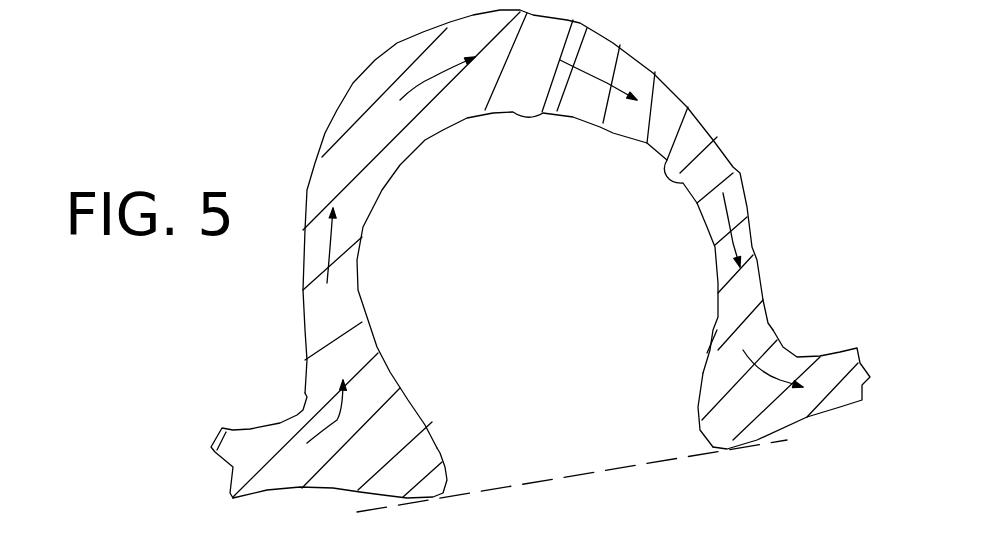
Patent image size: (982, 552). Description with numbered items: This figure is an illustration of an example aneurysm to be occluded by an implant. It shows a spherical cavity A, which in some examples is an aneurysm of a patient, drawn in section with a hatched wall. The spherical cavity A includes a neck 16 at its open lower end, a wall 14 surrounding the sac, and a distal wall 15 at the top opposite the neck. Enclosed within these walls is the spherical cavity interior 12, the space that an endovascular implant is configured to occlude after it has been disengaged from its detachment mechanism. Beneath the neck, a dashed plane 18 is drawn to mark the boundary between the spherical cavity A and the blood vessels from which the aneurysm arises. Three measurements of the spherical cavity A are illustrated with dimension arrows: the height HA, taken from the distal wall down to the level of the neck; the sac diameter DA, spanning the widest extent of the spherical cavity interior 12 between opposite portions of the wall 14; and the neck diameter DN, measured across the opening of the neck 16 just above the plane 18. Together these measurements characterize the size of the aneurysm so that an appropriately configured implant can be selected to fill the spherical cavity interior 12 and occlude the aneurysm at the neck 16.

The spherical cavity A is at (328, 133).
The spherical cavity interior 12 is at (382, 312).
The wall 14 is at (683, 182).
The distal wall 15 is at (603, 30).
The neck 16 is at (447, 477).
The plane 18 is at (597, 477).
The height HA is at (565, 420).
The sac diameter DA is at (697, 208).
The neck diameter DN is at (702, 383).